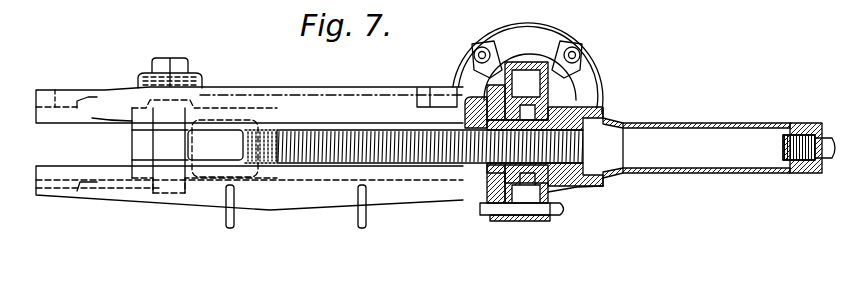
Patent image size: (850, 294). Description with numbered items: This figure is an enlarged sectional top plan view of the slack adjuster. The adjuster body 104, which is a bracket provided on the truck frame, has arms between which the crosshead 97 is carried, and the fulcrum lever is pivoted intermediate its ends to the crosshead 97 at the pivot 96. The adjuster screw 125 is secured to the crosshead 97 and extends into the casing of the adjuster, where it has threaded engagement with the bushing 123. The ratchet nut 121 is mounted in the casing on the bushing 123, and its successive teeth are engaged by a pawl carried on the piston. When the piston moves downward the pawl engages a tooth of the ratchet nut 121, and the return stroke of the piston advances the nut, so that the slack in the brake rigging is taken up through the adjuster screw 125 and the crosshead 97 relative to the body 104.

The pivot 96 is at (162, 143).
The crosshead 97 is at (204, 163).
The adjuster body 104 is at (300, 203).
The ratchet nut 121 is at (668, 174).
The bushing 123 is at (575, 188).
The adjuster screw 125 is at (342, 130).